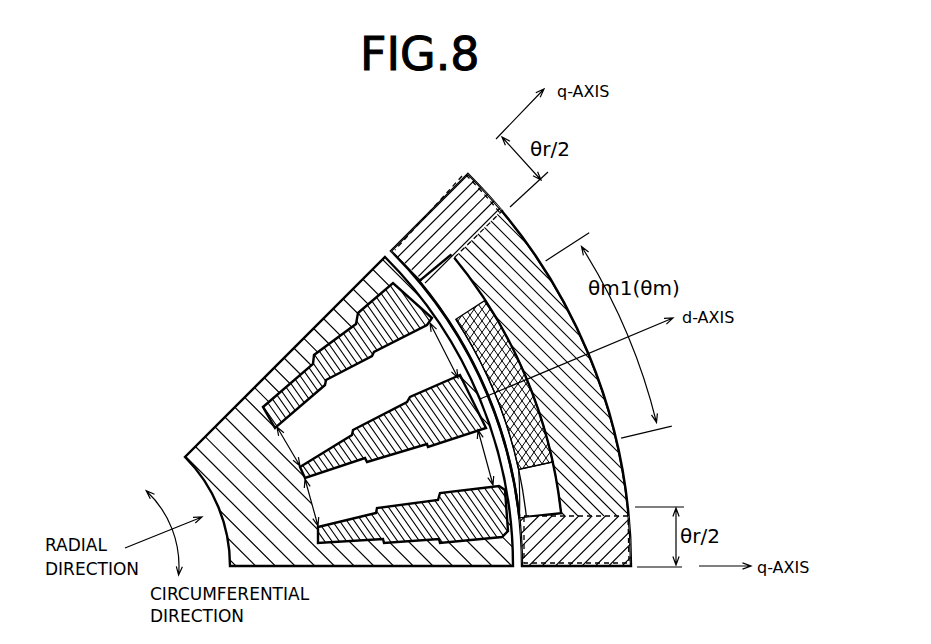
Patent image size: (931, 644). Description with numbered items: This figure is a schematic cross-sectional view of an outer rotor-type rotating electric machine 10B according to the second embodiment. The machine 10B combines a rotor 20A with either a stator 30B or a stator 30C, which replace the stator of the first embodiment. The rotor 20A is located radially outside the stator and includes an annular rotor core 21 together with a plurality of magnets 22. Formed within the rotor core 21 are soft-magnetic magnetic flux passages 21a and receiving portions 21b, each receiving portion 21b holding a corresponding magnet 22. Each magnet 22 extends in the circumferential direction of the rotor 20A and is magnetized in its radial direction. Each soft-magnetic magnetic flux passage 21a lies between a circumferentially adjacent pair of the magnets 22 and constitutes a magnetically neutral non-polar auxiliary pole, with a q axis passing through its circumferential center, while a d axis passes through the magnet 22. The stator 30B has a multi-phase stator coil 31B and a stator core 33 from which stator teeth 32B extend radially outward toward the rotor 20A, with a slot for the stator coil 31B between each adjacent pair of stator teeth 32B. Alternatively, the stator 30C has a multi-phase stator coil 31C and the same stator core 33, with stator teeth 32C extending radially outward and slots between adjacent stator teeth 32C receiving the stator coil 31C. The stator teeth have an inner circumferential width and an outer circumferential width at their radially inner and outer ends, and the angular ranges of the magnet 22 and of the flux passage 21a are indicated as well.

The outer rotor-type rotating electric machine 10B is at (465, 366).
The rotor 20A is at (465, 371).
The rotor core 21 is at (495, 371).
The soft-magnetic magnetic flux passage 21a is at (462, 186).
The receiving portion 21b is at (557, 494).
The magnet 22 is at (420, 268).
The stator 30B is at (425, 396).
The stator 30C is at (425, 396).
The stator coil 31B is at (355, 340).
The stator coil 31C is at (342, 318).
The stator teeth 32B is at (394, 383).
The stator teeth 32C is at (297, 360).
The stator core 33 is at (252, 450).